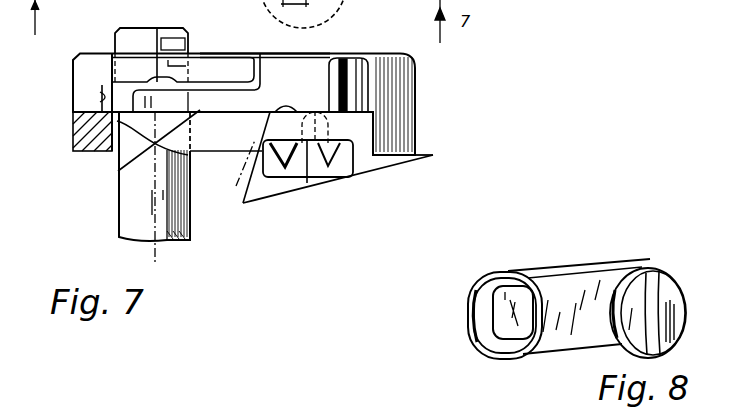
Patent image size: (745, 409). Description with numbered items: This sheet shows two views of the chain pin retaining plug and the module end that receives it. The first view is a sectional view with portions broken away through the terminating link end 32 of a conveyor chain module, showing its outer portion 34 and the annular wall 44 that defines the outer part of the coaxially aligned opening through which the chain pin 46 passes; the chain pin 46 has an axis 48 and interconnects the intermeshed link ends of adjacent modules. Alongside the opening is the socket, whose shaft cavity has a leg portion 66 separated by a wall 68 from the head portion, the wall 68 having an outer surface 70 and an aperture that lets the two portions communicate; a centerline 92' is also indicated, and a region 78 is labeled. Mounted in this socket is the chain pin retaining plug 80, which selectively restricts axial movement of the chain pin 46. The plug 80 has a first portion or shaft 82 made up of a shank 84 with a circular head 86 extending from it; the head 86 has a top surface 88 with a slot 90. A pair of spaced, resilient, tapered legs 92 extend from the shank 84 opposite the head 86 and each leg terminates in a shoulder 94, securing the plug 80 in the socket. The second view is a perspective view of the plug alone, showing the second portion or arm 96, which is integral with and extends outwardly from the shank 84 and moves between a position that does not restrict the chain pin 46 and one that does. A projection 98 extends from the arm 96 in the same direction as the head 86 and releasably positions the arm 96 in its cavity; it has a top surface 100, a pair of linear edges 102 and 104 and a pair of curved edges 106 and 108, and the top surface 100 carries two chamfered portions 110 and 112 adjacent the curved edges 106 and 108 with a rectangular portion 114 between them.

In FIG. 7, the terminating link end 32 is at (72, 60).
In FIG. 7, the outer portion 34 is at (241, 44).
In FIG. 7, the annular wall 44 is at (175, 33).
In FIG. 7, the chain pin 46 is at (118, 198).
In FIG. 7, the axis 48 is at (148, 250).
In FIG. 7, the leg portion 66 is at (433, 155).
In FIG. 7, the wall 68 is at (308, 183).
In FIG. 7, the outer surface 70 is at (238, 156).
In FIG. 7, the port 78 is at (100, 97).
In FIG. 7, the chain pin retaining plug 80 is at (345, 90).
In FIG. 8, the chain pin retaining plug 80 is at (668, 248).
In FIG. 7, the shaft 82 is at (345, 107).
In FIG. 7, the shank 84 is at (283, 82).
In FIG. 7, the circular head 86 is at (302, 54).
In FIG. 8, the circular head 86 is at (676, 300).
In FIG. 7, the top surface 88 is at (352, 57).
In FIG. 8, the top surface 88 is at (672, 281).
In FIG. 7, the slot 90 is at (345, 70).
In FIG. 8, the slot 90 is at (653, 335).
In FIG. 7, the legs 92 is at (391, 130).
In FIG. 7, the centerline 92' is at (226, 170).
In FIG. 7, the shoulder 94 is at (280, 180).
In FIG. 7, the arm 96 is at (118, 167).
In FIG. 8, the arm 96 is at (566, 324).
In FIG. 7, the projection 98 is at (157, 29).
In FIG. 8, the projection 98 is at (493, 336).
In FIG. 8, the top surface 100 is at (493, 310).
In FIG. 8, the linear edge 102 is at (493, 324).
In FIG. 8, the linear edge 104 is at (551, 330).
In FIG. 8, the curved edge 106 is at (538, 270).
In FIG. 8, the curved edge 108 is at (505, 352).
In FIG. 8, the chamfered portion 110 is at (514, 272).
In FIG. 8, the chamfered portion 112 is at (513, 340).
In FIG. 8, the rectangular portion 114 is at (493, 296).